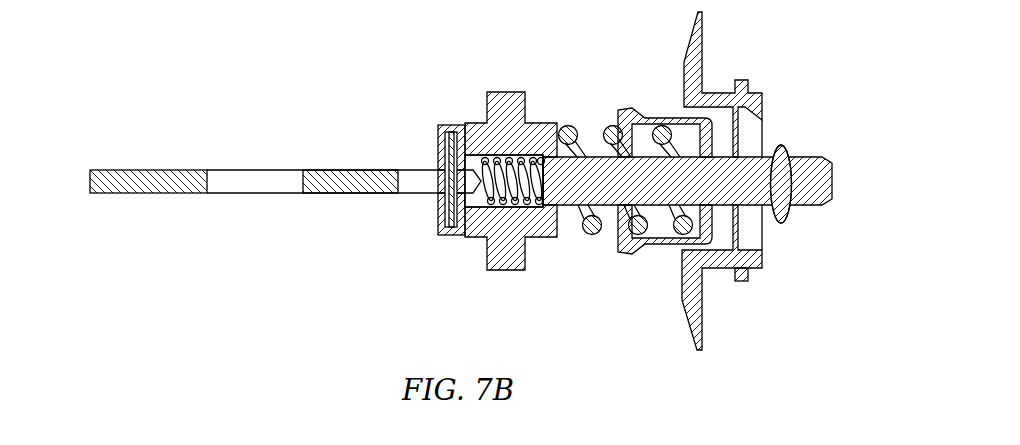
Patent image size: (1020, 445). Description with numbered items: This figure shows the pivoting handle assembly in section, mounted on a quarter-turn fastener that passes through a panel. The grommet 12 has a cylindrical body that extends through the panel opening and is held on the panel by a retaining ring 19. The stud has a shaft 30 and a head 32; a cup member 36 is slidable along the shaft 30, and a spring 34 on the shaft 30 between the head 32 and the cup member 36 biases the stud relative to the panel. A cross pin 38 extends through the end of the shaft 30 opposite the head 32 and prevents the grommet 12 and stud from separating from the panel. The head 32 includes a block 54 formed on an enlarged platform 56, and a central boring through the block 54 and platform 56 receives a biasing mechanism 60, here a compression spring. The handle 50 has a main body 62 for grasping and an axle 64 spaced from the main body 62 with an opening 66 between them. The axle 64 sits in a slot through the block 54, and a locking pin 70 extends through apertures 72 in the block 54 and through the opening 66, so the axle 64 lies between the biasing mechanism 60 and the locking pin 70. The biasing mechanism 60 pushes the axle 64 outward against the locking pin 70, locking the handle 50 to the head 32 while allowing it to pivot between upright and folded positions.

The grommet 12 is at (735, 181).
The retaining ring 19 is at (745, 282).
The shaft 30 is at (600, 180).
The head 32 is at (505, 75).
The spring 34 is at (592, 236).
The cup member 36 is at (628, 112).
The cross pin 38 is at (790, 226).
The handle 50 is at (281, 174).
The block 54 is at (472, 124).
The platform 56 is at (505, 271).
The biasing mechanism 60 is at (517, 160).
The main body 62 is at (172, 194).
The axle 64 is at (472, 183).
The opening 66 is at (417, 184).
The locking pin 70 is at (452, 213).
The apertures 72 is at (418, 204).